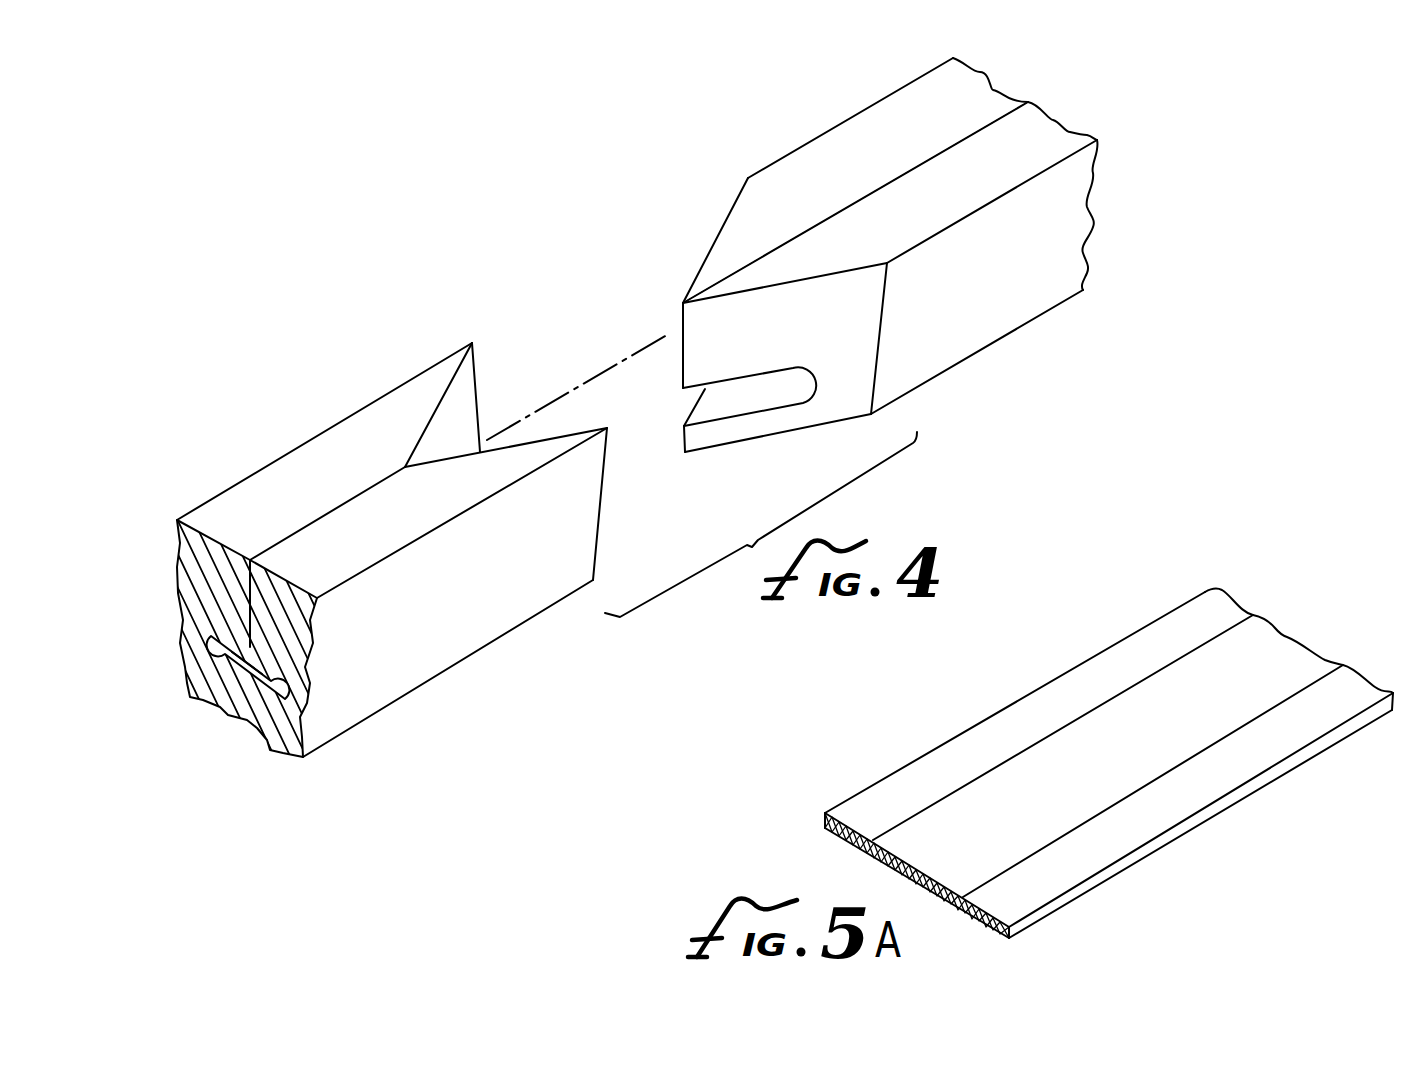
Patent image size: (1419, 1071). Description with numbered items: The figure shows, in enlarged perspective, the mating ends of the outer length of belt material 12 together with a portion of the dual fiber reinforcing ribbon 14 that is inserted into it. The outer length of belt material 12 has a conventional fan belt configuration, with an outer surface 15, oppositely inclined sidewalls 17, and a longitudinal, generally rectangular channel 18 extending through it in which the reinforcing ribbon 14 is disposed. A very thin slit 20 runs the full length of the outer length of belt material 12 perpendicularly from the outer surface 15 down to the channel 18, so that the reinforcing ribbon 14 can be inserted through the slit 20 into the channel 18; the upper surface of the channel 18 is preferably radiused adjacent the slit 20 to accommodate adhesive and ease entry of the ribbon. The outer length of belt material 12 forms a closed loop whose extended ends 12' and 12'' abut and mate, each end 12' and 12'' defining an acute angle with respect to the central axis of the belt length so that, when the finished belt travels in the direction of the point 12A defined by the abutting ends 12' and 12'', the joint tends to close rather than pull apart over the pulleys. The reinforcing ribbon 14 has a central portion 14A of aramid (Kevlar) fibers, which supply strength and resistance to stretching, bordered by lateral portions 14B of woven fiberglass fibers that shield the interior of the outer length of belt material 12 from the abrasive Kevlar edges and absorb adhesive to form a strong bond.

In FIG. 4, the outer length of belt material 12 is at (571, 409).
In FIG. 4, the extended end 12' is at (672, 240).
In FIG. 4, the extended end 12'' is at (481, 388).
In FIG. 4, the point 12A is at (683, 315).
In FIG. 4, the outer surface 15 is at (815, 188).
In FIG. 4, the oppositely inclined sidewalls 17 is at (1078, 252).
In FIG. 4, the channel 18 is at (755, 388).
In FIG. 4, the slit 20 is at (915, 168).
In FIG. 5A, the reinforcing ribbon 14 is at (1126, 664).
In FIG. 5A, the central portion 14A is at (1273, 663).
In FIG. 5A, the lateral portions 14B is at (1203, 610).